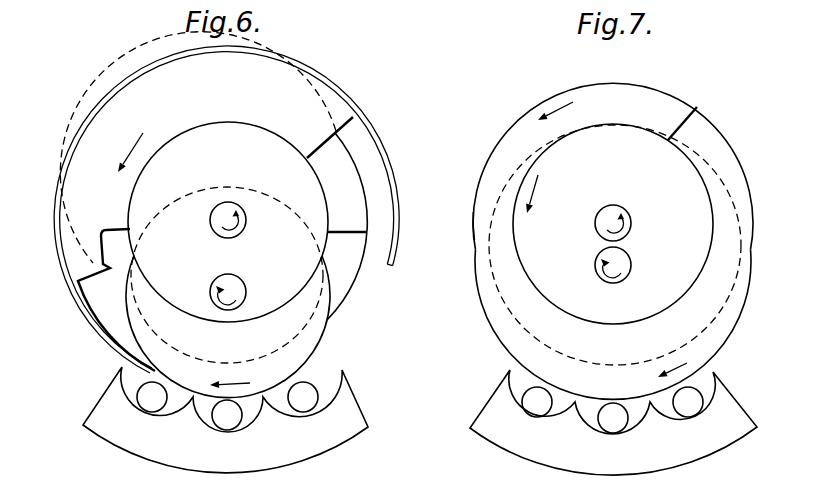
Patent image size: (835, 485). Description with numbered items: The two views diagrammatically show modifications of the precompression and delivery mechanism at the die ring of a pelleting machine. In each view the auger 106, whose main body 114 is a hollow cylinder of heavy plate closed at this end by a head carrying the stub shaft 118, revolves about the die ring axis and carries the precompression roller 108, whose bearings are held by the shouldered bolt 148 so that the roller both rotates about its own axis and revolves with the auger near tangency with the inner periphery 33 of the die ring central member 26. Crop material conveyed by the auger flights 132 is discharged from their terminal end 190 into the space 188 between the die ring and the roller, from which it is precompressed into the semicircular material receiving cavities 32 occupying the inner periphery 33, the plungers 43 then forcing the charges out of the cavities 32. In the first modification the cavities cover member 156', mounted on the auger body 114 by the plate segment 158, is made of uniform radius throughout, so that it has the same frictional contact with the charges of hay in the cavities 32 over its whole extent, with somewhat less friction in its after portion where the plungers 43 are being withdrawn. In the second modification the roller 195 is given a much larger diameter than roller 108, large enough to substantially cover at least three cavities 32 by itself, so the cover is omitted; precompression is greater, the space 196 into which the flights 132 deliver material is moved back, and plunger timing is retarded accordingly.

In FIG. 6, the cavities cover member 156' is at (226, 209).
In FIG. 6, the plate segment 158 is at (110, 165).
In FIG. 6, the auger body 114 is at (235, 122).
In FIG. 7, the auger body 114 is at (623, 126).
In FIG. 6, the terminal end of the auger flighting 190 is at (343, 228).
In FIG. 7, the terminal end of the auger flighting 190 is at (683, 127).
In FIG. 6, the auger 106 is at (358, 280).
In FIG. 7, the auger 106 is at (476, 236).
In FIG. 6, the precompression roller 108 is at (312, 346).
In FIG. 6, the auger flights 132 is at (84, 231).
In FIG. 7, the auger flights 132 is at (482, 200).
In FIG. 6, the stub shaft 118 is at (218, 224).
In FIG. 7, the stub shaft 118 is at (606, 217).
In FIG. 6, the shouldered bolt 148 is at (217, 287).
In FIG. 7, the shouldered bolt 148 is at (600, 265).
In FIG. 7, the roller 195 is at (493, 327).
In FIG. 7, the space 188 is at (697, 110).
In FIG. 7, the space 196 is at (762, 269).
In FIG. 6, the central member 26 is at (107, 428).
In FIG. 7, the central member 26 is at (492, 430).
In FIG. 6, the plungers 43 is at (150, 404).
In FIG. 7, the plungers 43 is at (537, 405).
In FIG. 6, the material receiving cavities 32 is at (281, 410).
In FIG. 7, the material receiving cavities 32 is at (663, 410).
In FIG. 6, the inner periphery 33 is at (335, 386).
In FIG. 7, the inner periphery 33 is at (712, 399).